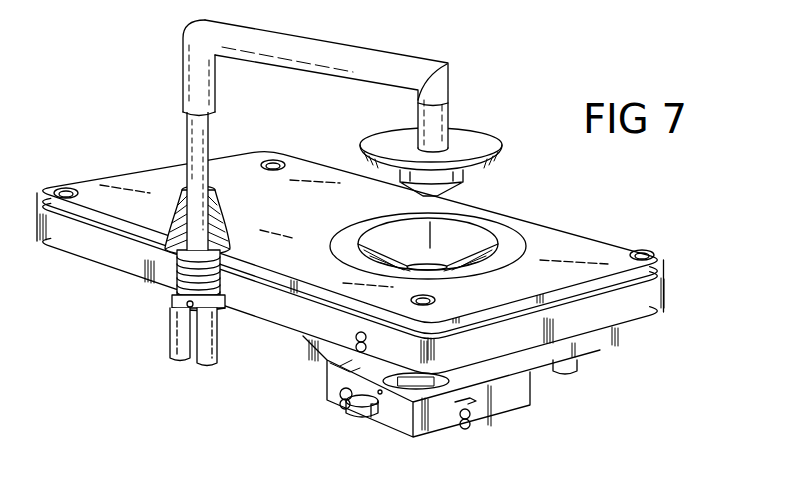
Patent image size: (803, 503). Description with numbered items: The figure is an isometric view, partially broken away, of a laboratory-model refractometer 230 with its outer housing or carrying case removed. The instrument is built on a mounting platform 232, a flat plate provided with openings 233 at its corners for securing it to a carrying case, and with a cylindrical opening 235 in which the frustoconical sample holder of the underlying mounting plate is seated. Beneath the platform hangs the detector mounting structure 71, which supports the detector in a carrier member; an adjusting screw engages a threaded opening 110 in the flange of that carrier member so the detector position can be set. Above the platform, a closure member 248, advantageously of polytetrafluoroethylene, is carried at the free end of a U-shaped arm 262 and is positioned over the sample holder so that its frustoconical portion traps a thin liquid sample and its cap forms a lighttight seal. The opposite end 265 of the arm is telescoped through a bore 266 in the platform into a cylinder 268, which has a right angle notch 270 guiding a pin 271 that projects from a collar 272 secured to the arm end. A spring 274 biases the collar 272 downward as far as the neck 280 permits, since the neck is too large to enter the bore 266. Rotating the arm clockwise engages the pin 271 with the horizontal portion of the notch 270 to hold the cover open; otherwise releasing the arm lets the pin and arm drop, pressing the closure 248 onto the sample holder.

The laboratory-model refractometer 230 is at (96, 316).
The mounting platform 232 is at (131, 168).
The openings 233 is at (60, 182).
The cylindrical opening 235 is at (350, 226).
The closure member 248 is at (500, 158).
The U-shaped arm 262 is at (327, 47).
The opposite end of arm 265 is at (189, 148).
The bore 266 is at (208, 195).
The cylinder 268 is at (173, 350).
The right angle notch 270 is at (173, 320).
The pin 271 is at (224, 302).
The collar 272 is at (185, 304).
The spring 274 is at (233, 256).
The neck 280 is at (216, 106).
The detector mounting structure 71 is at (315, 416).
The threaded opening 110 is at (364, 418).